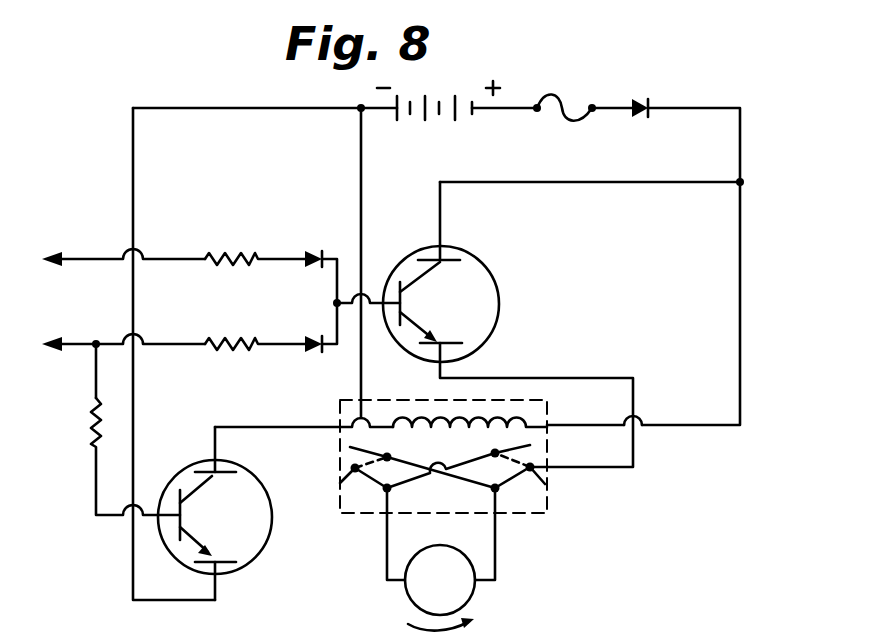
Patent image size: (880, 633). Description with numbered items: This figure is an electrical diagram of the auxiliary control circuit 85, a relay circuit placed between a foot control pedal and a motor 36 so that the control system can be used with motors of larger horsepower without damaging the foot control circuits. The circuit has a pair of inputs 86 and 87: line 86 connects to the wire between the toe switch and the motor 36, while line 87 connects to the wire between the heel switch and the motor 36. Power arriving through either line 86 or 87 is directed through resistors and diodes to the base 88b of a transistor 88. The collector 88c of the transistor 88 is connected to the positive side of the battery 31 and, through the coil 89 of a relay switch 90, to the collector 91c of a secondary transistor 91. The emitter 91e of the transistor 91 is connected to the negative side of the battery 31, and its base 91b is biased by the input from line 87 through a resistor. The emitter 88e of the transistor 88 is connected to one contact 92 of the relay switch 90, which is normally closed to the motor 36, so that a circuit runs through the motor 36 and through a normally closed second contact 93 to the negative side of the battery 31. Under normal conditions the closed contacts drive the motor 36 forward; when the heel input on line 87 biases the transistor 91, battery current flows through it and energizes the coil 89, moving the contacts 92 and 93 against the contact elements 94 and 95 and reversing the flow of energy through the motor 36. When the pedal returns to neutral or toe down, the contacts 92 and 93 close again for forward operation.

The battery 31 is at (439, 130).
The motor 36 is at (475, 593).
The auxiliary control circuit 85 is at (509, 476).
The input line 86 is at (93, 258).
The input line 87 is at (84, 348).
The transistor 88 is at (466, 289).
The base of transistor 88 88b is at (406, 304).
The collector of transistor 88 88c is at (444, 257).
The emitter of transistor 88 88e is at (446, 346).
The relay coil 89 is at (427, 420).
The relay switch 90 is at (372, 500).
The secondary transistor 91 is at (223, 517).
The base of transistor 91 91b is at (186, 515).
The collector of transistor 91 91c is at (209, 467).
The emitter of transistor 91 91e is at (228, 576).
The relay contact 92 is at (545, 484).
The second relay contact 93 is at (340, 483).
The contact element 94 is at (530, 445).
The contact element 95 is at (350, 447).